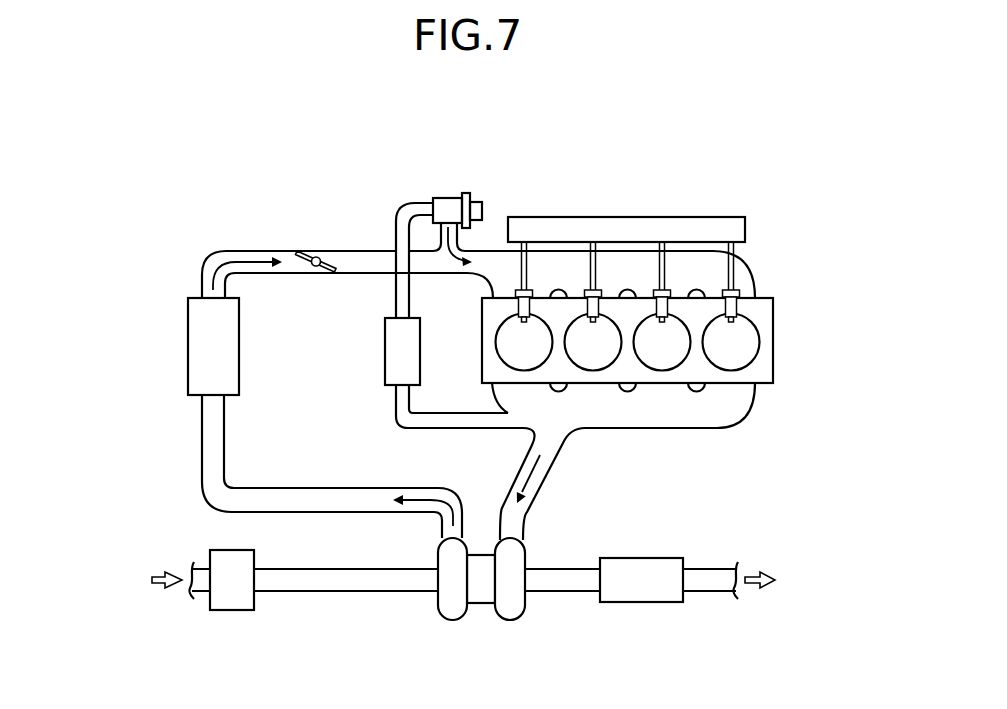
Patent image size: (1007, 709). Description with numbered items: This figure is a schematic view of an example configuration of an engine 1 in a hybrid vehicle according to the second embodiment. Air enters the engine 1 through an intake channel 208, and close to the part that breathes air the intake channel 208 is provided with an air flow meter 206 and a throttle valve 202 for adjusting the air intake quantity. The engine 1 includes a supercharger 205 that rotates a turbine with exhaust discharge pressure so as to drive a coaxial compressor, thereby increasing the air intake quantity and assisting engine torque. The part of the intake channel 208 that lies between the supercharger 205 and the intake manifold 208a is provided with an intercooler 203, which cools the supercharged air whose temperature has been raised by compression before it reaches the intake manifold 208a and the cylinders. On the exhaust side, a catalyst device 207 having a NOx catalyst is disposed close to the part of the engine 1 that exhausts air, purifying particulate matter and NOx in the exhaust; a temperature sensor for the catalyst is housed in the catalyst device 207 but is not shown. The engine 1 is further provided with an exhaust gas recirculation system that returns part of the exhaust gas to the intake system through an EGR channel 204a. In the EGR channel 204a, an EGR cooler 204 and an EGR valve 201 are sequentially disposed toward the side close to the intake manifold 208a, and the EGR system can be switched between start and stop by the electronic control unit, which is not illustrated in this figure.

The engine 1 is at (666, 136).
The EGR valve 201 is at (482, 206).
The throttle valve 202 is at (316, 250).
The intercooler 203 is at (198, 333).
The EGR cooler 204 is at (398, 351).
The EGR channel 204a is at (450, 422).
The supercharger 205 is at (482, 598).
The air flow meter 206 is at (230, 602).
The catalyst device 207 is at (648, 590).
The intake channel 208 is at (345, 584).
The intake manifold 208a is at (364, 258).